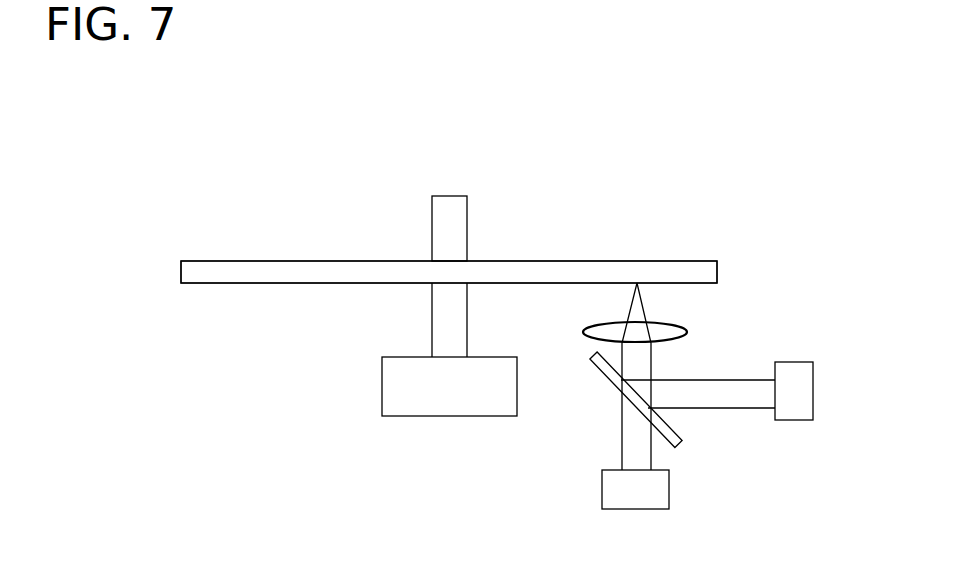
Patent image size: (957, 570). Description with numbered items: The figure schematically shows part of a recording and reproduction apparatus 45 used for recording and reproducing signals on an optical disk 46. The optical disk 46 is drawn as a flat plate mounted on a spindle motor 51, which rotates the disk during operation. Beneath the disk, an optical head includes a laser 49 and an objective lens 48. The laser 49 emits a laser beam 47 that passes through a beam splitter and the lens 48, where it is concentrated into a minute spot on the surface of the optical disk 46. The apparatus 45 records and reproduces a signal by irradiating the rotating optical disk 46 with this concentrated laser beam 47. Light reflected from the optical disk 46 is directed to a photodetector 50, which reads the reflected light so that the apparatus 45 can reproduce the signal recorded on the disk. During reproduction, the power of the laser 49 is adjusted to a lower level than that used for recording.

The recording and reproduction apparatus 45 is at (603, 148).
The optical disk 46 is at (245, 260).
The laser beam 47 is at (643, 310).
The objective lens 48 is at (665, 330).
The laser 49 is at (805, 403).
The photodetector 50 is at (658, 493).
The spindle motor 51 is at (412, 403).